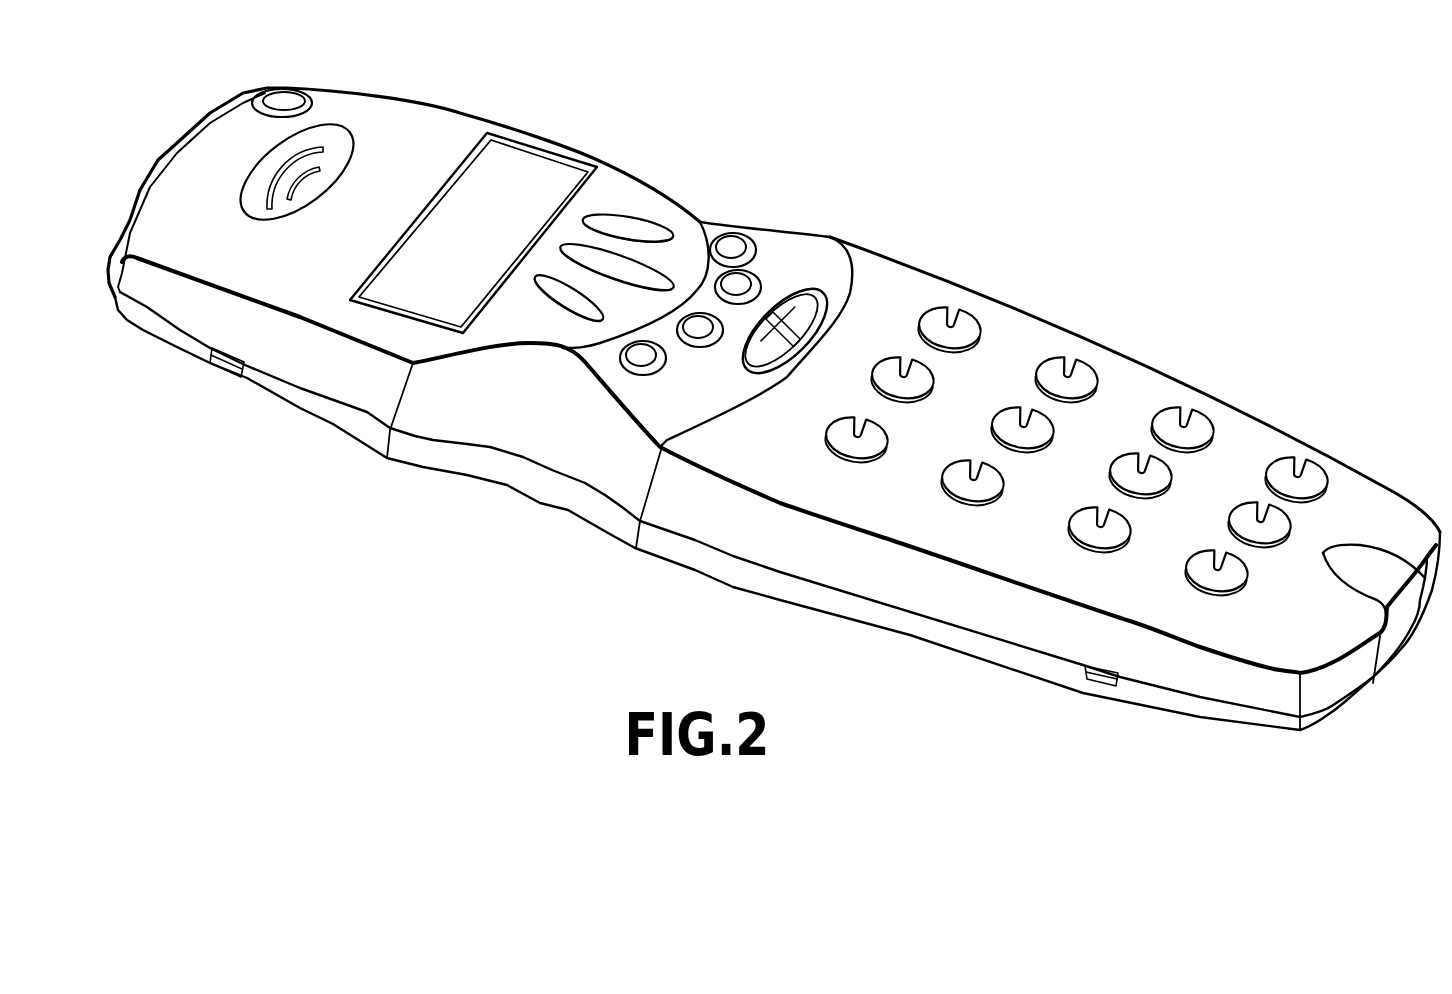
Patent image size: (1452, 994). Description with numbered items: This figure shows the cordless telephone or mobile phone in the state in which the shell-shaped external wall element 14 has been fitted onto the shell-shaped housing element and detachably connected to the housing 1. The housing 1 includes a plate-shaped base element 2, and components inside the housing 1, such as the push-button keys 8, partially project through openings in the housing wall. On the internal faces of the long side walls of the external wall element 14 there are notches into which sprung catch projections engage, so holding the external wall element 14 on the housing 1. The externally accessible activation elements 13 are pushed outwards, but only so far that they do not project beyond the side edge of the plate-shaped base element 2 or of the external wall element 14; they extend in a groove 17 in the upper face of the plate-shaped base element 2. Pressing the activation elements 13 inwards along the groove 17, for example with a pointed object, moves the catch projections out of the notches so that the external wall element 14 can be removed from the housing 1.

The housing 1 is at (480, 548).
The plate-shaped base element 2 is at (912, 634).
The push-button keys 8 is at (643, 222).
The activation element 13 is at (216, 372).
The external wall element 14 is at (796, 552).
The groove 17 is at (244, 380).